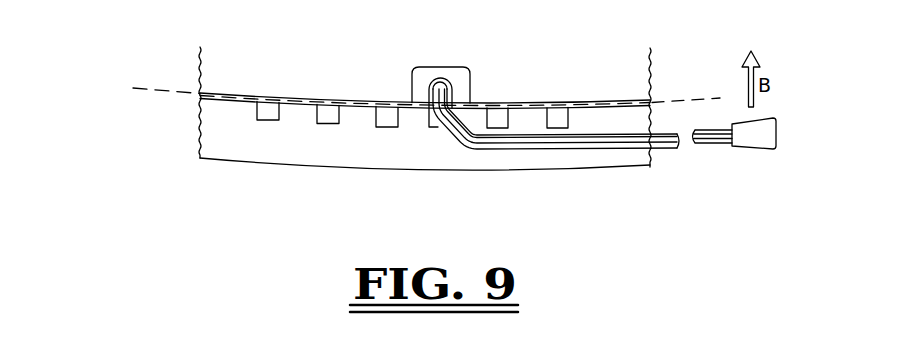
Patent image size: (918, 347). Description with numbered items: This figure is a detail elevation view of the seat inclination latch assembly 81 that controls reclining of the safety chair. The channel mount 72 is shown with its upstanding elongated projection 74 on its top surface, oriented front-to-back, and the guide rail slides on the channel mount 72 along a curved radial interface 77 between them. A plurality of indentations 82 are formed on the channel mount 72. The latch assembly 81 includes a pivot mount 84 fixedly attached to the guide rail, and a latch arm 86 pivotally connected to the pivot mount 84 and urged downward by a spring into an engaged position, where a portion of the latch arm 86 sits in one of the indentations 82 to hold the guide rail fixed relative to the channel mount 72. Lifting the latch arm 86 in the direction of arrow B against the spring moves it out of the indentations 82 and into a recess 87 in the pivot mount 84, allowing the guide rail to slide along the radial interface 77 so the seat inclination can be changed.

The channel mount 72 is at (356, 180).
The upstanding elongated projection 74 is at (186, 61).
The radial interface 77 is at (147, 91).
The seat inclination latch assembly 81 is at (446, 153).
The indentations 82 is at (314, 117).
The pivot mount 84 is at (396, 77).
The latch arm 86 is at (745, 133).
The recess 87 is at (445, 80).